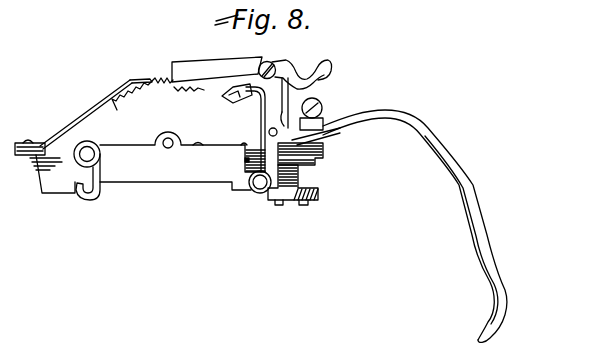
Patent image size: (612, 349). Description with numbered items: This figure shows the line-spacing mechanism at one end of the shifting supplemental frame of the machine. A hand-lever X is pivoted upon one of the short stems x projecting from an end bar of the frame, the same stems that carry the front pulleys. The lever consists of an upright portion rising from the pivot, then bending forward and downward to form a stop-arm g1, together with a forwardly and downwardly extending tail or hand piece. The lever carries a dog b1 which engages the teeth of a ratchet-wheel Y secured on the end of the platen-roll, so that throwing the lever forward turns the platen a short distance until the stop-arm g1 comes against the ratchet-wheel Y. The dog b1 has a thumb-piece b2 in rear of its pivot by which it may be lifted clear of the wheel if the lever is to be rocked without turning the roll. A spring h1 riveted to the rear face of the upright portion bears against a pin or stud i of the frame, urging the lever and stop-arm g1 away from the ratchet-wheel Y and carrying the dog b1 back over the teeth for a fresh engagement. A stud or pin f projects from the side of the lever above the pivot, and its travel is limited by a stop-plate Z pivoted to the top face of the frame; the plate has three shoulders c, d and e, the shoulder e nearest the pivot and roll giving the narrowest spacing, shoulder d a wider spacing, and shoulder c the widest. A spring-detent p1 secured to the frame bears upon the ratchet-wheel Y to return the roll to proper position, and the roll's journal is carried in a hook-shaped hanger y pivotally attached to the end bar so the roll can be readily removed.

The spring-detent p1 is at (83, 136).
The hook-shaped hanger y is at (90, 179).
The ratchet-wheel Y is at (175, 134).
The dog b1 is at (224, 56).
The thumb-piece b2 is at (302, 66).
The stop-arm g1 is at (229, 93).
The spring h1 is at (258, 124).
The shoulder e is at (220, 131).
The pin or stud i is at (247, 160).
The stem x is at (257, 186).
The stud or pin f is at (280, 98).
The stop-plate Z is at (318, 107).
The hand-lever X is at (399, 226).
The shoulder c is at (318, 147).
The shoulder d is at (290, 125).